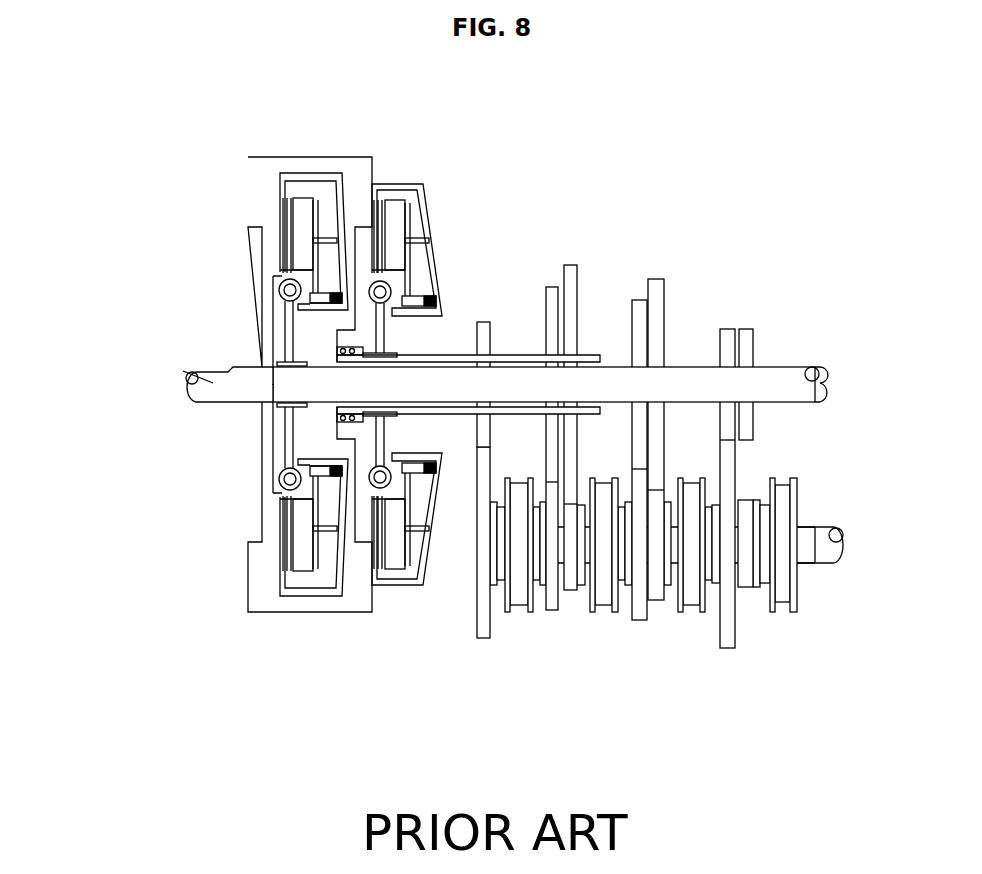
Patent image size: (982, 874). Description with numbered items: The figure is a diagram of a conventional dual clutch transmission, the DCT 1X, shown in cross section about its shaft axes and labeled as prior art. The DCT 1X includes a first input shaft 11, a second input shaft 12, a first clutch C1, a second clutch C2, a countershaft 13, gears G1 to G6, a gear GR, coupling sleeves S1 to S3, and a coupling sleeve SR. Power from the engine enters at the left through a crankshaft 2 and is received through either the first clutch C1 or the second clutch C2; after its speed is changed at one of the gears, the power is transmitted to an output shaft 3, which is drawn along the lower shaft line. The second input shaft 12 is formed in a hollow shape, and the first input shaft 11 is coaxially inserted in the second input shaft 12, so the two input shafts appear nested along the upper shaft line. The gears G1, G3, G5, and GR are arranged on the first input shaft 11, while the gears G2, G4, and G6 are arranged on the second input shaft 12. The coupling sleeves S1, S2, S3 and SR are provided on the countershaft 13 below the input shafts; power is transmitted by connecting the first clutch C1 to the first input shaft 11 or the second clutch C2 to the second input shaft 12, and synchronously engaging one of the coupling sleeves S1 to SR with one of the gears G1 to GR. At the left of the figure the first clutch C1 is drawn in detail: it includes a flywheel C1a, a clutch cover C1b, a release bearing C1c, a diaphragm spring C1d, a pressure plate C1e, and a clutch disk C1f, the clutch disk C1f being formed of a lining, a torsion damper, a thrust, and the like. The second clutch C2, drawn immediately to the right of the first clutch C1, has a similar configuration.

The DCT 1X is at (760, 185).
The crankshaft 2 is at (215, 382).
The output shaft 3 is at (828, 548).
The first input shaft 11 is at (790, 372).
The second input shaft 12 is at (530, 355).
The countershaft 13 is at (497, 547).
The first clutch C1 is at (242, 353).
The flywheel C1a is at (265, 190).
The clutch cover C1b is at (340, 203).
The release bearing C1c is at (313, 302).
The diaphragm spring C1d is at (279, 290).
The pressure plate C1e is at (282, 210).
The clutch disk C1f is at (282, 248).
The second clutch C2 is at (437, 162).
The gear G1 is at (727, 325).
The gear G2 is at (485, 335).
The gear G3 is at (640, 320).
The gear G4 is at (553, 312).
The gear G5 is at (655, 295).
The gear G6 is at (571, 290).
The gear GR is at (750, 322).
The coupling sleeve S1 is at (693, 558).
The coupling sleeve S2 is at (520, 558).
The coupling sleeve S3 is at (603, 558).
The coupling sleeve SR is at (782, 563).